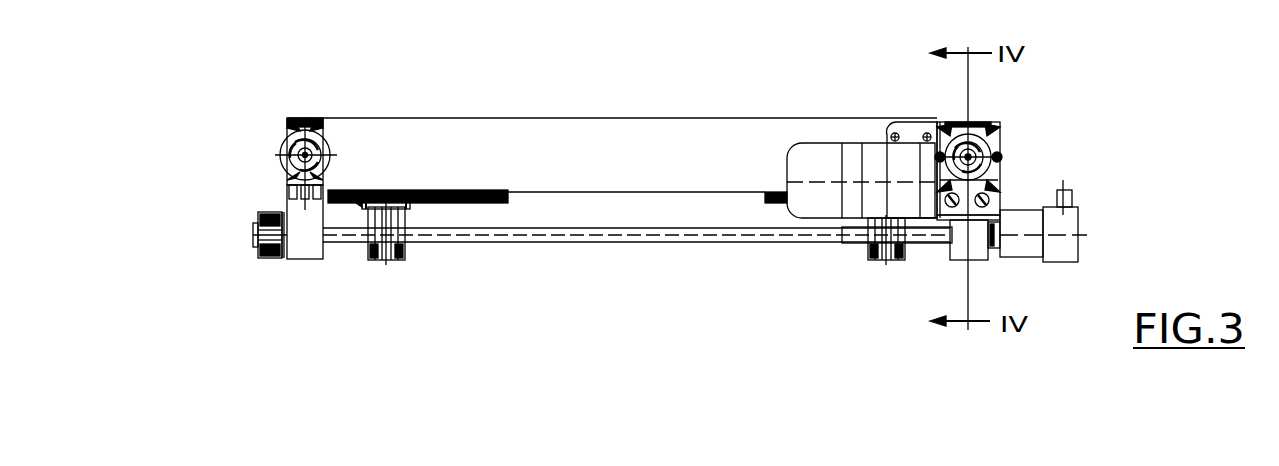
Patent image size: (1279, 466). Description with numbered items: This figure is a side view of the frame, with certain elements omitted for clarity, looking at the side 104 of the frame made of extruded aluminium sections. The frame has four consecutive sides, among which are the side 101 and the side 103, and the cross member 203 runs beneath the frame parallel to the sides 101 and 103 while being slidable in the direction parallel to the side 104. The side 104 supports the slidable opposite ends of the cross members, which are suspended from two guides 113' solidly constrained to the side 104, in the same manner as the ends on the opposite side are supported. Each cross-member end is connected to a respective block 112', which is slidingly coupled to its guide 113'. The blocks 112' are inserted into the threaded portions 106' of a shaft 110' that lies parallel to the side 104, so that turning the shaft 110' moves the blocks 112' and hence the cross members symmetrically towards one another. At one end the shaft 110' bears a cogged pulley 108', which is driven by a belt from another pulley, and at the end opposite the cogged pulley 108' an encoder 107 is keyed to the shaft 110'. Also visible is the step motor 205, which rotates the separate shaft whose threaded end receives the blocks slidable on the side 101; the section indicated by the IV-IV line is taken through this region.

The side 101 is at (1000, 128).
The side 103 is at (287, 118).
The side 104 is at (725, 118).
The encoder 107 is at (1027, 262).
The cogged pulley 108' is at (224, 290).
The threaded portions 106' is at (632, 295).
The shaft 110' is at (602, 295).
The blocks 112' is at (636, 315).
The guides 113' is at (557, 279).
The cross member 203 is at (385, 200).
The step motor 205 is at (823, 155).